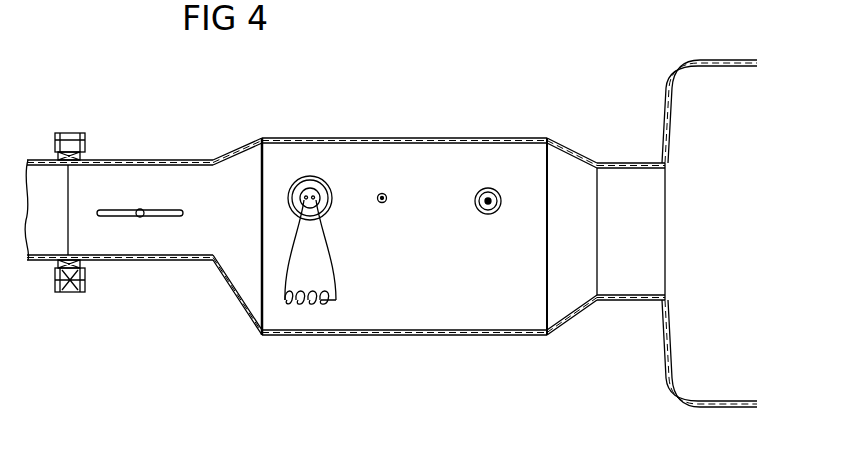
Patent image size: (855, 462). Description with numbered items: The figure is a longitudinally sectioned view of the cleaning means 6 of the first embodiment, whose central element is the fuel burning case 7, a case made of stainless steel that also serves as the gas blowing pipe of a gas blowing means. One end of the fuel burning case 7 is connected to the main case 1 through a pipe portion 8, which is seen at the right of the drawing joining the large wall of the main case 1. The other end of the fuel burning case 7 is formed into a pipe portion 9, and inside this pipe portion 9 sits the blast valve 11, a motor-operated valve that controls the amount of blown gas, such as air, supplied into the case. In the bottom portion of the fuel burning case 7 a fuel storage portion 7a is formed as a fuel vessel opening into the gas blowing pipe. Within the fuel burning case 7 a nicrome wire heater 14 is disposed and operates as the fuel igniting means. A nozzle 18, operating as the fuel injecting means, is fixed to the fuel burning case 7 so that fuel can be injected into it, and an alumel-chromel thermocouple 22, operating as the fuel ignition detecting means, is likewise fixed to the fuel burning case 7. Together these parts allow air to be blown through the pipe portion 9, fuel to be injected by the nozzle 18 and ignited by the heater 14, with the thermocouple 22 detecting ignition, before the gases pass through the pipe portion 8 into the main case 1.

The main case 1 is at (698, 59).
The cleaning means 6 is at (229, 295).
The fuel burning case 7 is at (306, 138).
The fuel storage portion 7a is at (449, 337).
The pipe portion 8 is at (634, 162).
The pipe portion 9 is at (138, 160).
The blast valve 11 is at (171, 207).
The nicrome wire heater 14 is at (303, 302).
The nozzle 18 is at (487, 188).
The alumel-chromel thermocouple 22 is at (382, 193).